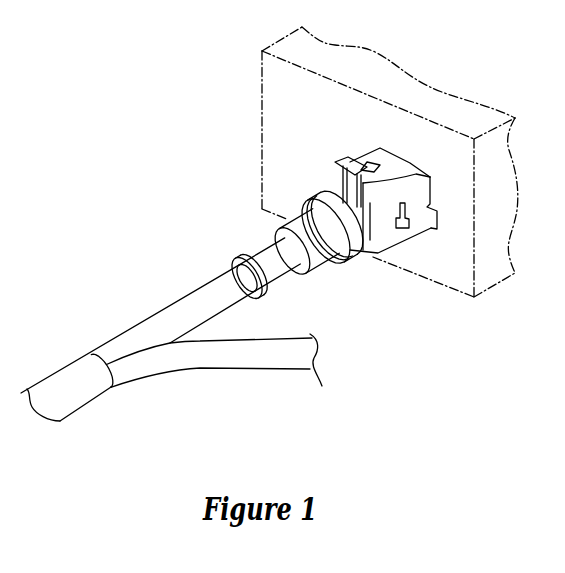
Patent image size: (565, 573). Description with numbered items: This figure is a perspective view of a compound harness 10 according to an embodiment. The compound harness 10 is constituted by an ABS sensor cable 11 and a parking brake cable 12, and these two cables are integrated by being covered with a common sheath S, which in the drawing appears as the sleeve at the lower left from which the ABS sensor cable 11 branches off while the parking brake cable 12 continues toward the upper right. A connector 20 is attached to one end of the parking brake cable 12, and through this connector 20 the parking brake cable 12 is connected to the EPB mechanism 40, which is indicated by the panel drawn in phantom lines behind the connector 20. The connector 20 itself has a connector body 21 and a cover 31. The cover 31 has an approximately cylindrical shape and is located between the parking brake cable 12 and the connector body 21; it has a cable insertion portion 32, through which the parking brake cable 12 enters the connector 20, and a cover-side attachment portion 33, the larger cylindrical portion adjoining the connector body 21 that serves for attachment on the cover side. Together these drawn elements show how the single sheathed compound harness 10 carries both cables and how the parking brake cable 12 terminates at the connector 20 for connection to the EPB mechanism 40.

The compound harness 10 is at (136, 209).
The ABS sensor cable 11 is at (263, 362).
The parking brake cable 12 is at (203, 292).
The connector 20 is at (334, 217).
The connector body 21 is at (362, 165).
The cover 31 is at (263, 250).
The cable insertion portion 32 is at (280, 277).
The cover-side attachment portion 33 is at (313, 206).
The EPB mechanism 40 is at (262, 69).
The sheath S is at (70, 370).